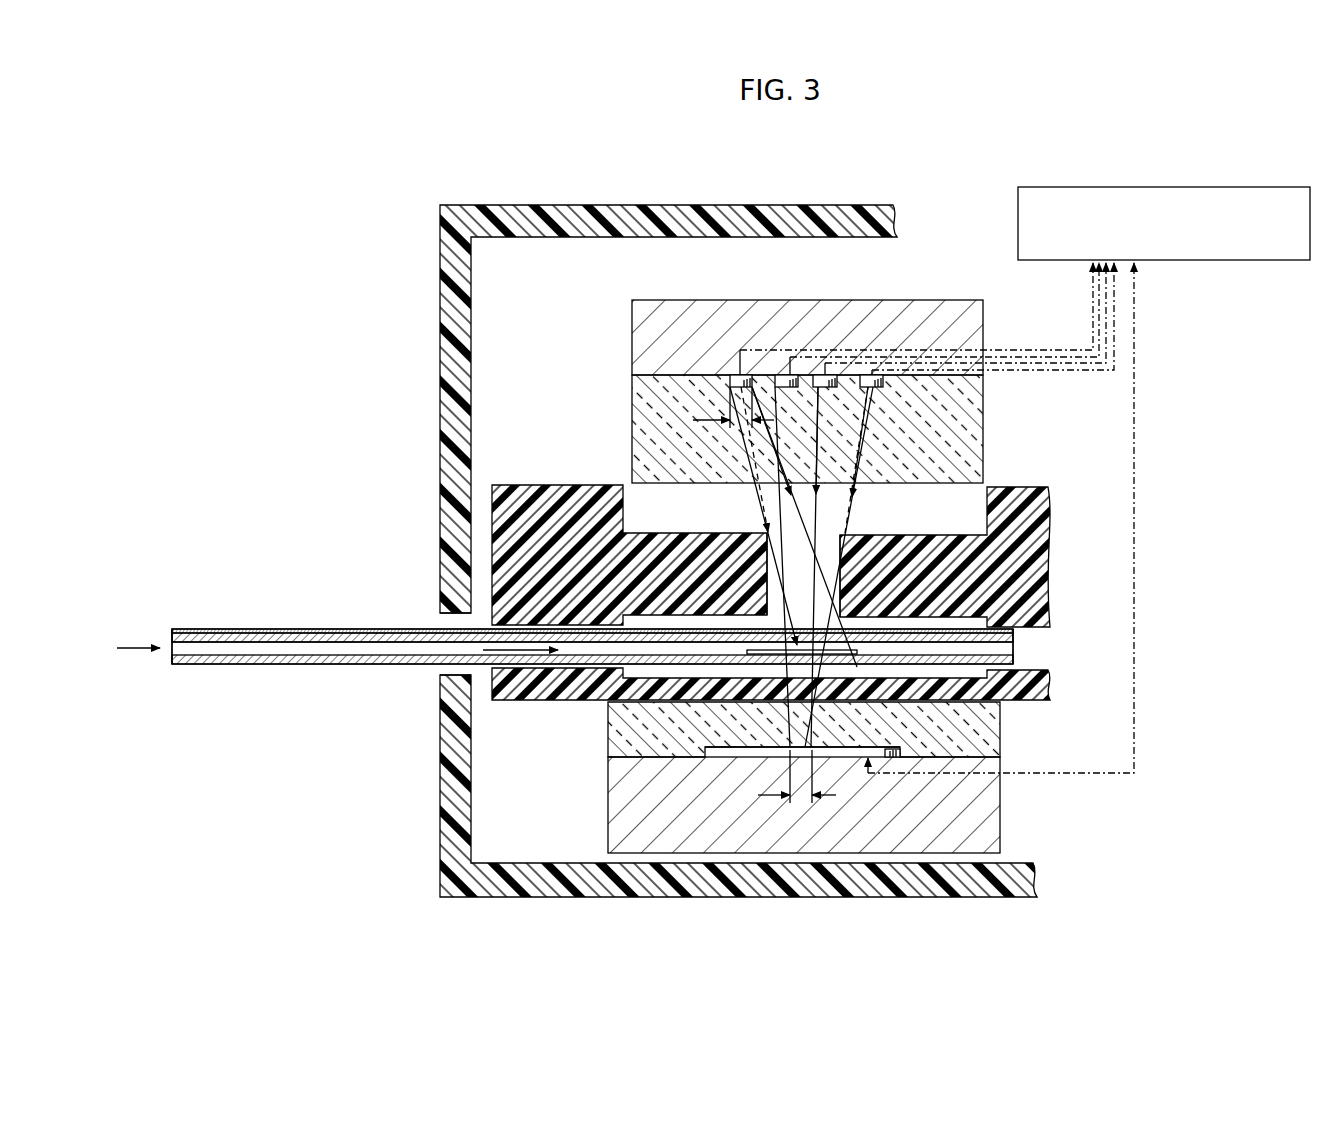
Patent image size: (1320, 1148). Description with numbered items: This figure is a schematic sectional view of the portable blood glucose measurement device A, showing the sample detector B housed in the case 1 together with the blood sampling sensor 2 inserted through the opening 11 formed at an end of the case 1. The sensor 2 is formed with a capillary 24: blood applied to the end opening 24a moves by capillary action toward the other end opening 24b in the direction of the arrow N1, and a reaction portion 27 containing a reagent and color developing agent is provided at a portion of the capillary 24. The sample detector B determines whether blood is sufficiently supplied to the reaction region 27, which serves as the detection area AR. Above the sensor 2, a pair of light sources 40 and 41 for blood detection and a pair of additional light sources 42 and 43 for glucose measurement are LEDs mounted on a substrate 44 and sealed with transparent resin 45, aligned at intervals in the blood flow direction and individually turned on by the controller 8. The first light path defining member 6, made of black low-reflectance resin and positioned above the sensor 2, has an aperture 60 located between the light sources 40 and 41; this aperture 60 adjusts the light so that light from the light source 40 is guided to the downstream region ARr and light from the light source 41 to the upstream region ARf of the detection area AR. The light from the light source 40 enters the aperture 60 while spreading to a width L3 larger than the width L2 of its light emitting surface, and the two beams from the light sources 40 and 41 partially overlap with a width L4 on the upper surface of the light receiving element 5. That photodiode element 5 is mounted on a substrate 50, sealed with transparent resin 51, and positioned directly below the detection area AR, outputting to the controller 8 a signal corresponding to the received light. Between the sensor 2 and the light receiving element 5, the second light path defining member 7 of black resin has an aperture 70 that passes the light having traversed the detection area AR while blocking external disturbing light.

The measurement device A is at (394, 186).
The sample detector B is at (591, 300).
The case 1 is at (662, 224).
The blood sampling sensor 2 is at (279, 625).
The light receiving element 5 is at (842, 753).
The first light path defining member 6 is at (928, 544).
The second light path defining member 7 is at (1020, 697).
The controller 8 is at (1163, 187).
The opening 11 is at (446, 668).
The capillary 24 is at (356, 641).
The end opening 24a is at (181, 648).
The end opening 24b is at (1003, 652).
The reaction portion 27 is at (778, 648).
The light source 40 is at (740, 372).
The light source 41 is at (875, 372).
The light source 42 is at (790, 372).
The light source 43 is at (822, 372).
The substrate 44 is at (632, 340).
The transparent resin 45 is at (632, 402).
The substrate 50 is at (617, 818).
The transparent resin 51 is at (613, 742).
The aperture 60 is at (836, 534).
The aperture 70 is at (767, 690).
The width of the light emitting surface L2 is at (730, 408).
The width L3 is at (798, 522).
The width L4 is at (792, 776).
The arrow N1 is at (524, 653).
The detection area AR is at (728, 555).
The region ARf is at (665, 595).
The region ARr is at (882, 580).